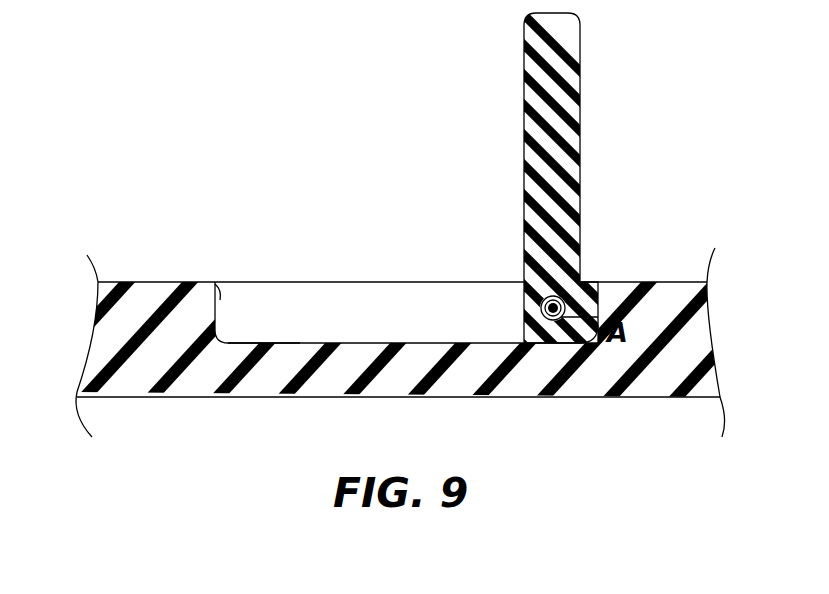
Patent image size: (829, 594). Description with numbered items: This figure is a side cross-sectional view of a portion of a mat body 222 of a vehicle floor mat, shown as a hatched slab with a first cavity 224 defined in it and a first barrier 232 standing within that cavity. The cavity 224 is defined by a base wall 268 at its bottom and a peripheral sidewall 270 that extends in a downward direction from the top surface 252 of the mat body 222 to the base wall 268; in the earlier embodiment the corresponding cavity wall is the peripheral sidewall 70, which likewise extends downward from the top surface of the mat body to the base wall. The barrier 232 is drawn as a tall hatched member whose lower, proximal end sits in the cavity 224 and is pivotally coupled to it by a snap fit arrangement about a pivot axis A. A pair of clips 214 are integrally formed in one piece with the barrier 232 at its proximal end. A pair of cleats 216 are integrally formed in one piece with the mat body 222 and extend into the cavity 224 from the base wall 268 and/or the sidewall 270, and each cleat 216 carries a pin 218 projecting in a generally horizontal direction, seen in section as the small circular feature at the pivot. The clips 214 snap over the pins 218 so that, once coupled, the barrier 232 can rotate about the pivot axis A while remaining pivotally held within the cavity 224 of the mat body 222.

The peripheral sidewall 70 is at (543, 230).
The first barrier 232 is at (580, 47).
The top surface 252 is at (127, 282).
The peripheral sidewall 270 is at (218, 300).
The base wall 268 is at (290, 343).
The cleats 216 is at (522, 328).
The clips 214 is at (602, 310).
The first cavity 224 is at (378, 344).
The mat body 222 is at (172, 398).
The pin 218 is at (549, 316).